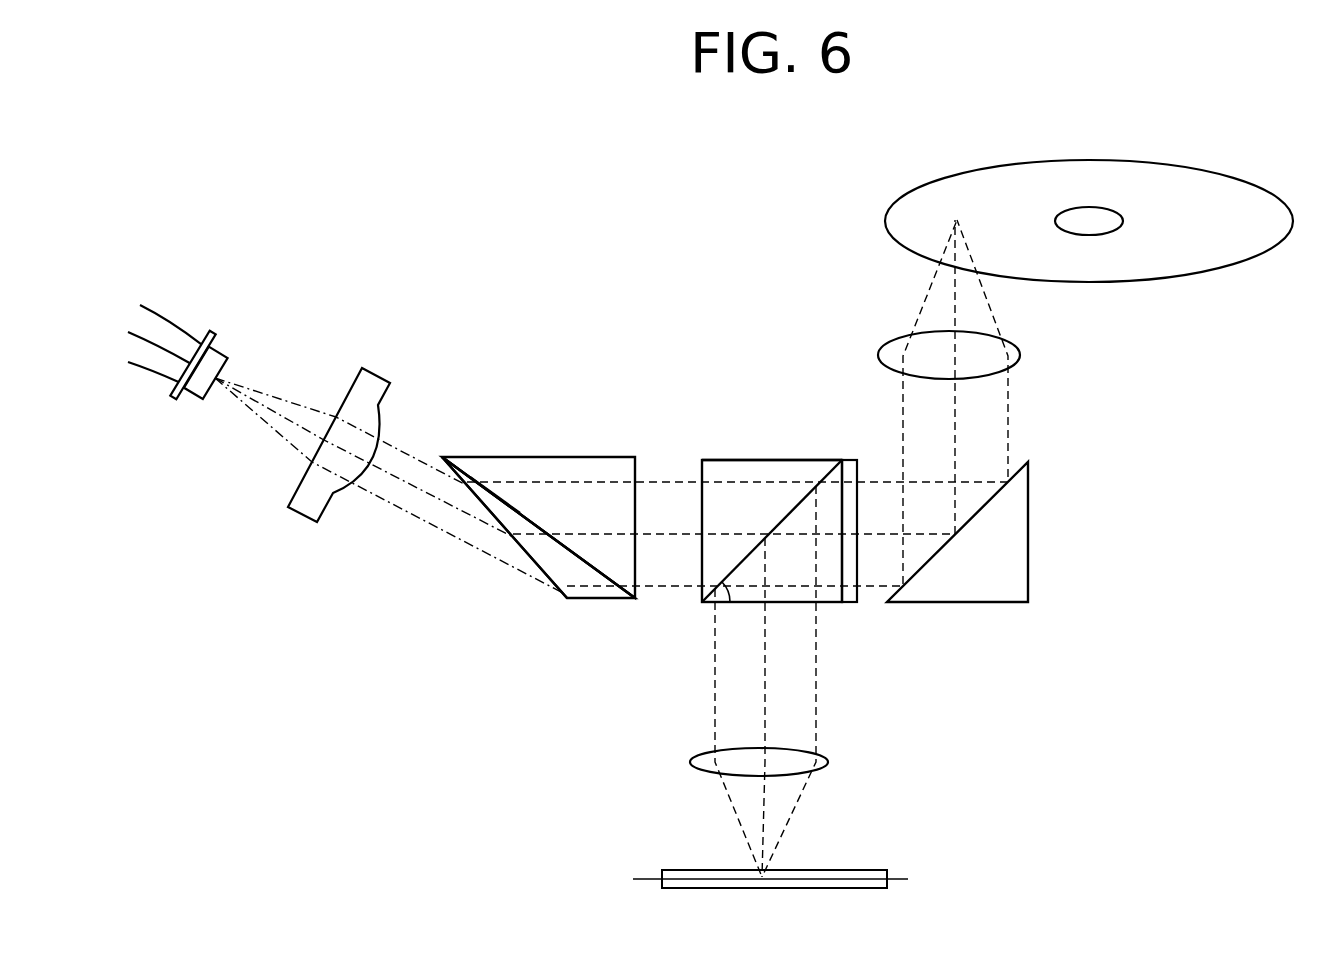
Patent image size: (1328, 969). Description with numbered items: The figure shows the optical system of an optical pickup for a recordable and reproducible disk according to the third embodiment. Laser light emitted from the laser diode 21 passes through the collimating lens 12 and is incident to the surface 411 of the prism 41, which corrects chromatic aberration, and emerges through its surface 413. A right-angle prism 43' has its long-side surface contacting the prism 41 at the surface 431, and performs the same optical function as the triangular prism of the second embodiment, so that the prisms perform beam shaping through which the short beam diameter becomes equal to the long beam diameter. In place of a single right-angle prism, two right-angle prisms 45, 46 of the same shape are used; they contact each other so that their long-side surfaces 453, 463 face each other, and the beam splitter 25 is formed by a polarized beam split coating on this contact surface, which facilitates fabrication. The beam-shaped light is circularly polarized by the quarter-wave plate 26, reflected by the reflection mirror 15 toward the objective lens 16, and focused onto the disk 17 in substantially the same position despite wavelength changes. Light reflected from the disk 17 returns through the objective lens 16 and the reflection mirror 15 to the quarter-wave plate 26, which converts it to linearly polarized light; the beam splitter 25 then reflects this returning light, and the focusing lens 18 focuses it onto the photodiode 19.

The collimating lens 12 is at (386, 382).
The reflection mirror 15 is at (1030, 515).
The objective lens 16 is at (880, 350).
The disk 17 is at (1245, 183).
The focusing lens 18 is at (696, 758).
The photodiode 19 is at (887, 880).
The laser diode 21 is at (214, 350).
The beam splitter 25 is at (784, 514).
The quarter-wave plate 26 is at (847, 460).
The prism 41 is at (593, 600).
The right-angle prism 43' is at (538, 469).
The right-angle prism 45 is at (768, 508).
The right-angle prism 46 is at (718, 460).
The surface 411 is at (539, 566).
The surface 413 is at (498, 505).
The surface 431 is at (490, 494).
The long-side surface 453 is at (717, 601).
The long-side surface 463 is at (822, 480).